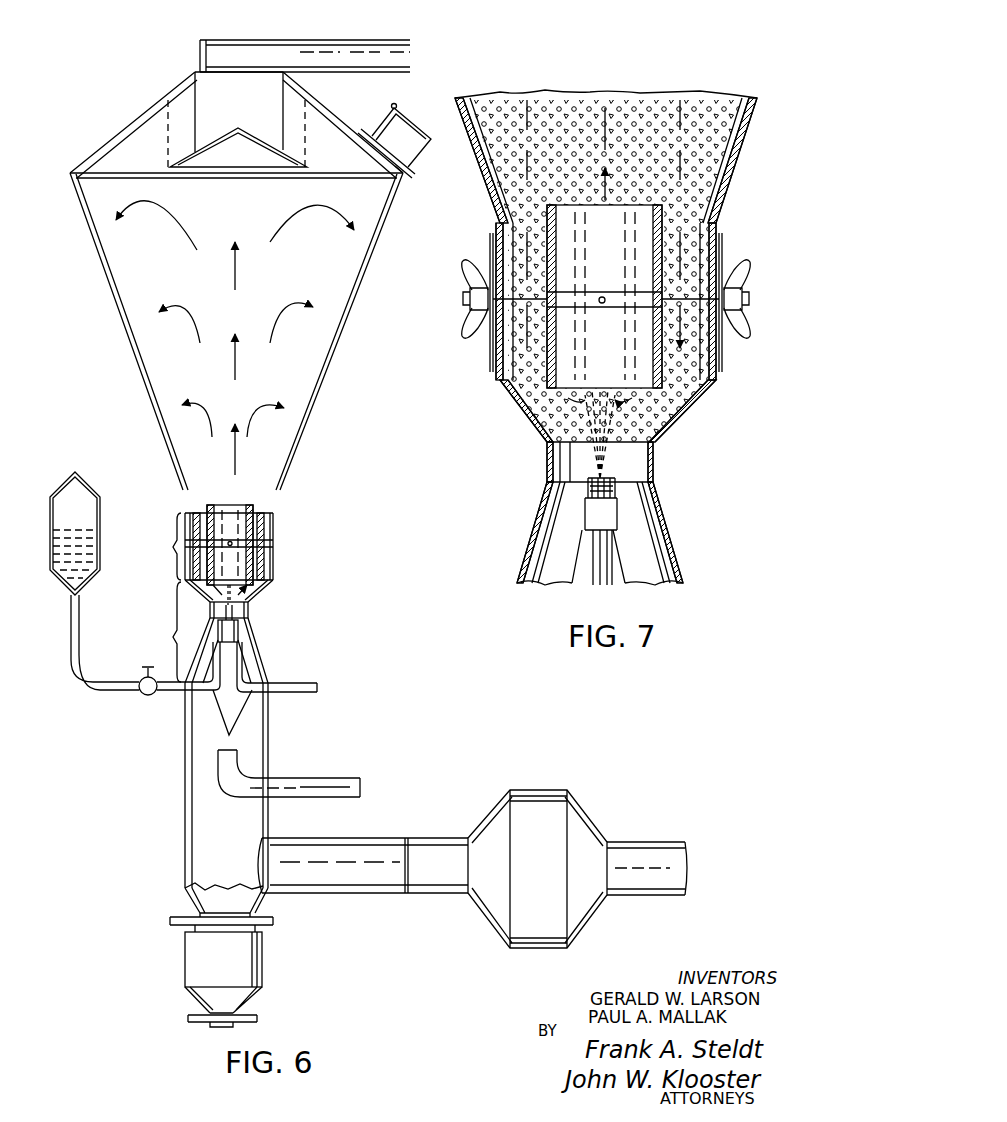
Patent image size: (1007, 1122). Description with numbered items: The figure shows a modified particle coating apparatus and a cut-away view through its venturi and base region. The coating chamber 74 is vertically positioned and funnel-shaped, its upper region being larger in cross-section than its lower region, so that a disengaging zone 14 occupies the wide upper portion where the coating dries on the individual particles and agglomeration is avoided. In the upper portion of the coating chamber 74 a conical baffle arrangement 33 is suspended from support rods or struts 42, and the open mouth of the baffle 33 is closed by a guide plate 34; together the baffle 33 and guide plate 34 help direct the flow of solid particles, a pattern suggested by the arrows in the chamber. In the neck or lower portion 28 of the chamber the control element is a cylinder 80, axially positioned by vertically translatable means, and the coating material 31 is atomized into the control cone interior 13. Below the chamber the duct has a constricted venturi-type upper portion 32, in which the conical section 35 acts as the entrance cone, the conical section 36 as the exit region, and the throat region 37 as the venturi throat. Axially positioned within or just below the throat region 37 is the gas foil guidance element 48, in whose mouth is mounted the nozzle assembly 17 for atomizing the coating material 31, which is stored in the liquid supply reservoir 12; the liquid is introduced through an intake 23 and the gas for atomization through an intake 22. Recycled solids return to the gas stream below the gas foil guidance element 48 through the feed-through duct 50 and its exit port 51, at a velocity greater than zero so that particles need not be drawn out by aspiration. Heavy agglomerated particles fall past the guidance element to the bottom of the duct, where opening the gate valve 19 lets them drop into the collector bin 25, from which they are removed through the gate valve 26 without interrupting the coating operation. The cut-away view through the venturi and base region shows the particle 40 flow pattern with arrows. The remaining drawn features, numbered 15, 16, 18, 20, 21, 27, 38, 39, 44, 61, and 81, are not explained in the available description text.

In FIG. 6, the liquid supply reservoir 12 is at (100, 522).
In FIG. 6, the control cone interior 13 is at (230, 520).
In FIG. 6, the disengaging zone 14 is at (325, 325).
In FIG. 7, the inner wall 15 is at (700, 320).
In FIG. 7, the chamber wall sleeve 16 is at (490, 252).
In FIG. 6, the nozzle assembly 17 is at (238, 630).
In FIG. 7, the nozzle assembly 17 is at (620, 475).
In FIG. 6, the valve 18 is at (148, 695).
In FIG. 6, the gate valve 19 is at (170, 917).
In FIG. 6, the separator 20 is at (585, 825).
In FIG. 6, the inlet pipe 21 is at (343, 52).
In FIG. 6, the intake 22 is at (305, 668).
In FIG. 7, the intake 22 is at (608, 588).
In FIG. 6, the intake 23 is at (122, 685).
In FIG. 7, the intake 23 is at (593, 588).
In FIG. 6, the collector bin 25 is at (200, 950).
In FIG. 6, the gate valve 26 is at (190, 1022).
In FIG. 7, the wing nut 27 is at (490, 325).
In FIG. 6, the neck or lower portion 28 is at (210, 546).
In FIG. 6, the coating material 31 is at (65, 567).
In FIG. 6, the constricted venturi-type upper portion 32 is at (181, 633).
In FIG. 6, the conical baffle arrangement 33 is at (268, 157).
In FIG. 6, the guide plate 34 is at (205, 172).
In FIG. 6, the conical section 35 is at (258, 652).
In FIG. 7, the conical section 35 is at (522, 530).
In FIG. 6, the conical section 36 is at (262, 596).
In FIG. 7, the conical section 36 is at (512, 410).
In FIG. 6, the throat region 37 is at (250, 609).
In FIG. 7, the throat region 37 is at (545, 465).
In FIG. 6, the inner diverging wall 38 is at (252, 672).
In FIG. 6, the roof corner 39 is at (403, 173).
In FIG. 7, the particle 40 is at (660, 105).
In FIG. 6, the support rods or struts 42 is at (283, 103).
In FIG. 6, the vent pipe 44 is at (413, 144).
In FIG. 6, the gas foil guidance element 48 is at (248, 724).
In FIG. 7, the gas foil guidance element 48 is at (625, 570).
In FIG. 6, the feed-through duct 50 is at (318, 778).
In FIG. 6, the exit port 51 is at (235, 752).
In FIG. 6, the discharge duct 61 is at (375, 878).
In FIG. 6, the coating chamber 74 is at (300, 412).
In FIG. 6, the cylinder 80 is at (275, 543).
In FIG. 7, the cylinder 80 is at (655, 390).
In FIG. 6, the guide line 81 is at (168, 115).